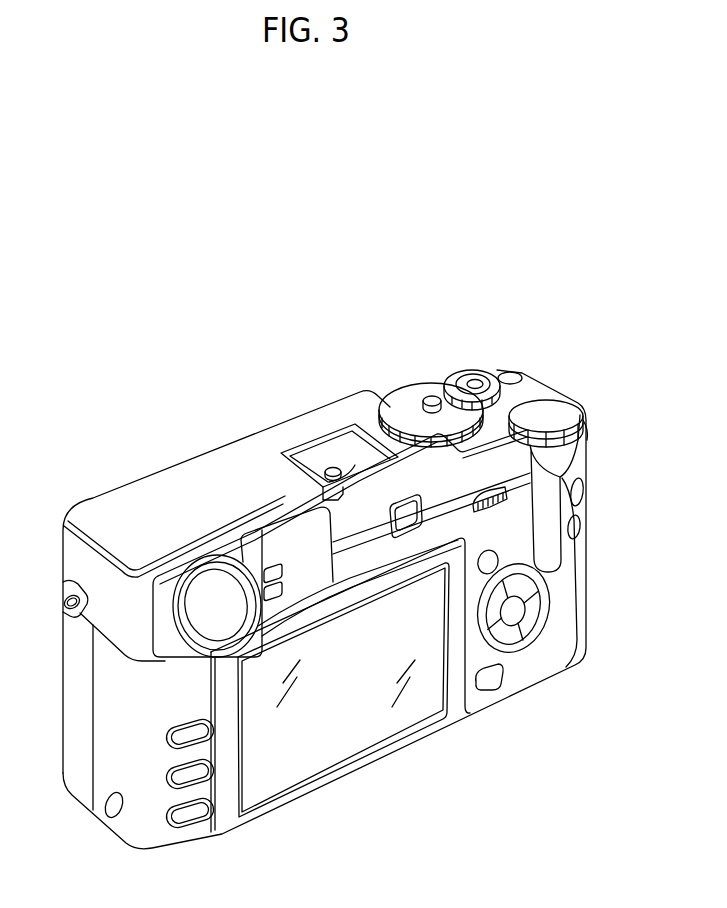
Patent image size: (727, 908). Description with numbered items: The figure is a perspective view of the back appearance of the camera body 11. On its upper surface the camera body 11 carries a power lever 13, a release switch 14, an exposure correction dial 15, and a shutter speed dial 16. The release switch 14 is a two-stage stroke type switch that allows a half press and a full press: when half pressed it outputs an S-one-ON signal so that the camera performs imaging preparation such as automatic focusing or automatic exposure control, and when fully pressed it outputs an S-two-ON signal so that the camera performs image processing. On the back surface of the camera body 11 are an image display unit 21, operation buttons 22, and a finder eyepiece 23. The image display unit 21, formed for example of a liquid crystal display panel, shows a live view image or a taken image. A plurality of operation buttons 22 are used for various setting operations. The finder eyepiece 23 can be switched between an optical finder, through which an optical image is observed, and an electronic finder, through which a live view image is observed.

The camera body 11 is at (185, 461).
The power lever 13 is at (454, 381).
The release switch 14 is at (476, 379).
The exposure correction dial 15 is at (565, 411).
The shutter speed dial 16 is at (407, 402).
The image display unit 21 is at (353, 750).
The operation buttons 22 is at (512, 642).
The finder eyepiece 23 is at (205, 617).